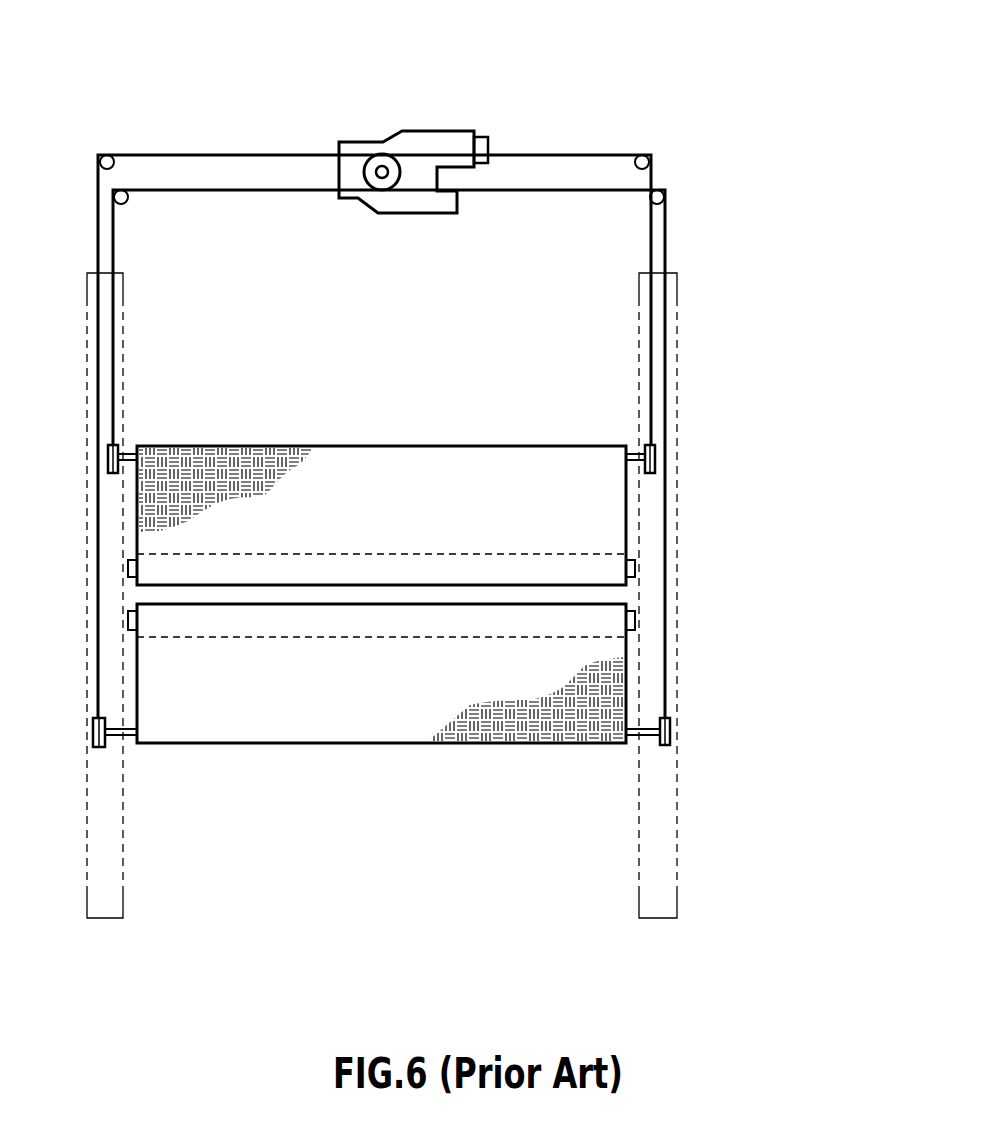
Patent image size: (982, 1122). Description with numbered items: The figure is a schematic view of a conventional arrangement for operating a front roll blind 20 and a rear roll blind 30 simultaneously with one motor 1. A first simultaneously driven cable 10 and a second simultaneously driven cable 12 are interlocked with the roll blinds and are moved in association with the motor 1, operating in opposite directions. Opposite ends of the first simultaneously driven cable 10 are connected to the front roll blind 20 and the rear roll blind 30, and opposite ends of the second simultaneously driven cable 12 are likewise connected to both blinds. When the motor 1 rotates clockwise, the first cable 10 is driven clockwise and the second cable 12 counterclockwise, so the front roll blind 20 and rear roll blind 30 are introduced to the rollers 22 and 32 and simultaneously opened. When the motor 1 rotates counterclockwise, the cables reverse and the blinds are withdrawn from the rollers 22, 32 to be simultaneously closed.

The motor 1 is at (361, 158).
The first simultaneously driven cable 10 is at (203, 153).
The second simultaneously driven cable 12 is at (576, 188).
The front roll blind 20 is at (507, 470).
The roller 22 is at (637, 572).
The rear roll blind 30 is at (548, 722).
The roller 32 is at (637, 620).